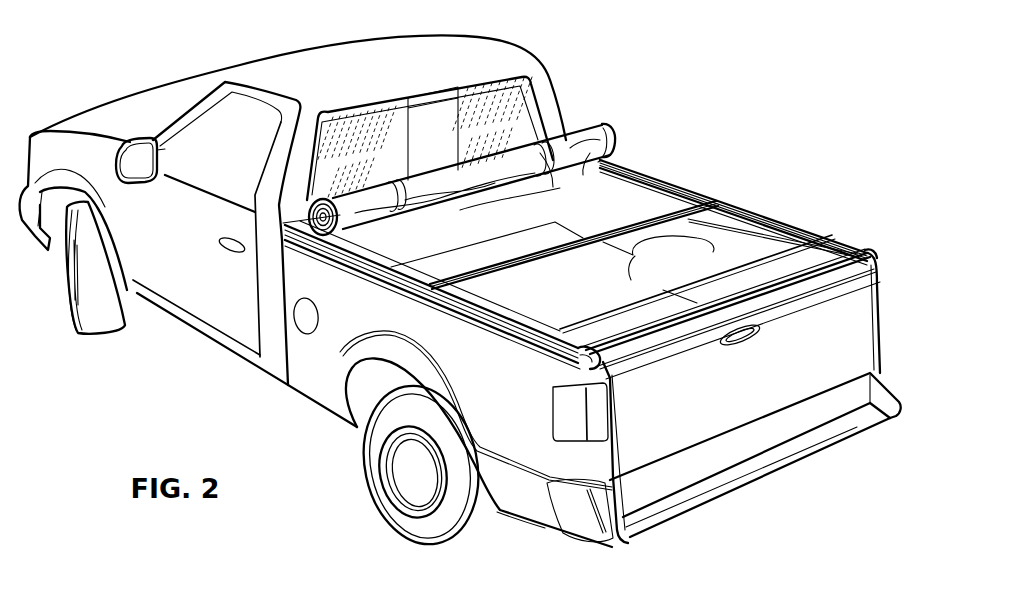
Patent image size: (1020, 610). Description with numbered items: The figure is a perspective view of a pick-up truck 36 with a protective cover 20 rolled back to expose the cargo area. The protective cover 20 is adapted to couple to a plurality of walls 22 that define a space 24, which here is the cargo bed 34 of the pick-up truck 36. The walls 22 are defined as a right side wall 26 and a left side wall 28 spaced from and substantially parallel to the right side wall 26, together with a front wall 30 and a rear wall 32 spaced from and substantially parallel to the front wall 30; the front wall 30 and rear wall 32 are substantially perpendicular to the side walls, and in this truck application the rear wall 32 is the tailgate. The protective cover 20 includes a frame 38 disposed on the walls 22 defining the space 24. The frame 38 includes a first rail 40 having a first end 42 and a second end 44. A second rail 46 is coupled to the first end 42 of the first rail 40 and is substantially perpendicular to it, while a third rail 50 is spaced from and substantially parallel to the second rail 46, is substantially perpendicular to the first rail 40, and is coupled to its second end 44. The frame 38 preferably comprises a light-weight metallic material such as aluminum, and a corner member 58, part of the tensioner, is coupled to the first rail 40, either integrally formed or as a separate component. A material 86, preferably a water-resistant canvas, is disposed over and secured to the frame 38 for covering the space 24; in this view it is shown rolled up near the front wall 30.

The protective cover 20 is at (585, 112).
The walls 22 is at (592, 196).
The space 24 is at (543, 277).
The right side wall 26 is at (660, 197).
The left side wall 28 is at (340, 410).
The front wall 30 is at (615, 127).
The rear wall 32 is at (747, 403).
The cargo bed 34 is at (508, 520).
The pick-up truck 36 is at (226, 48).
The frame 38 is at (730, 198).
The first rail 40 is at (780, 280).
The first end 42 is at (617, 335).
The second end 44 is at (843, 277).
The second rail 46 is at (507, 317).
The third rail 50 is at (764, 217).
The corner member 58 is at (587, 363).
The material 86 is at (347, 211).